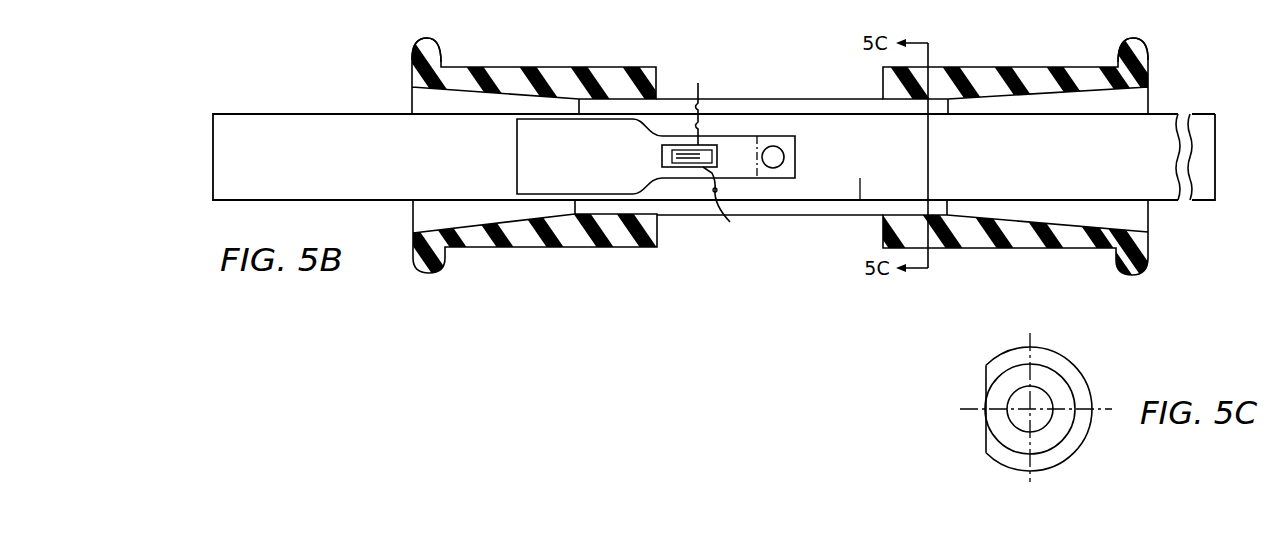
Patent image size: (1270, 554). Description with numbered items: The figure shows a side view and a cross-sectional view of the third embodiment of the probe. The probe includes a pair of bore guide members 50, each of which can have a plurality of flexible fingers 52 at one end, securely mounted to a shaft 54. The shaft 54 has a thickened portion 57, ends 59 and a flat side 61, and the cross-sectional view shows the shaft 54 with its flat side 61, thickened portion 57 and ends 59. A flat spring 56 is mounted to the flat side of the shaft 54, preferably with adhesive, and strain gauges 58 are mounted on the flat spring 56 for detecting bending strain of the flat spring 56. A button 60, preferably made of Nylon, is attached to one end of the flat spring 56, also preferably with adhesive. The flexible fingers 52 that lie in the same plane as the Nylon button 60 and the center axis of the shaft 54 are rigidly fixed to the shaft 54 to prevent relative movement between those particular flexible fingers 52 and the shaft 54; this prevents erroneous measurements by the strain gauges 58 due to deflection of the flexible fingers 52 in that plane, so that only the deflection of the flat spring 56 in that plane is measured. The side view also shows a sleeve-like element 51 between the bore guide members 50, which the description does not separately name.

In FIG. 5B, the bore guide member 50 is at (594, 67).
In FIG. 5B, the sleeve 51 is at (873, 98).
In FIG. 5B, the flexible fingers 52 is at (420, 37).
In FIG. 5B, the shaft 54 is at (213, 170).
In FIG. 5B, the flat spring 56 is at (657, 170).
In FIG. 5C, the thickened portion 57 is at (1080, 452).
In FIG. 5B, the strain gauges 58 is at (718, 160).
In FIG. 5C, the ends 59 is at (1012, 455).
In FIG. 5B, the button 60 is at (785, 157).
In FIG. 5B, the flat side 61 is at (862, 178).
In FIG. 5C, the flat side 61 is at (985, 390).